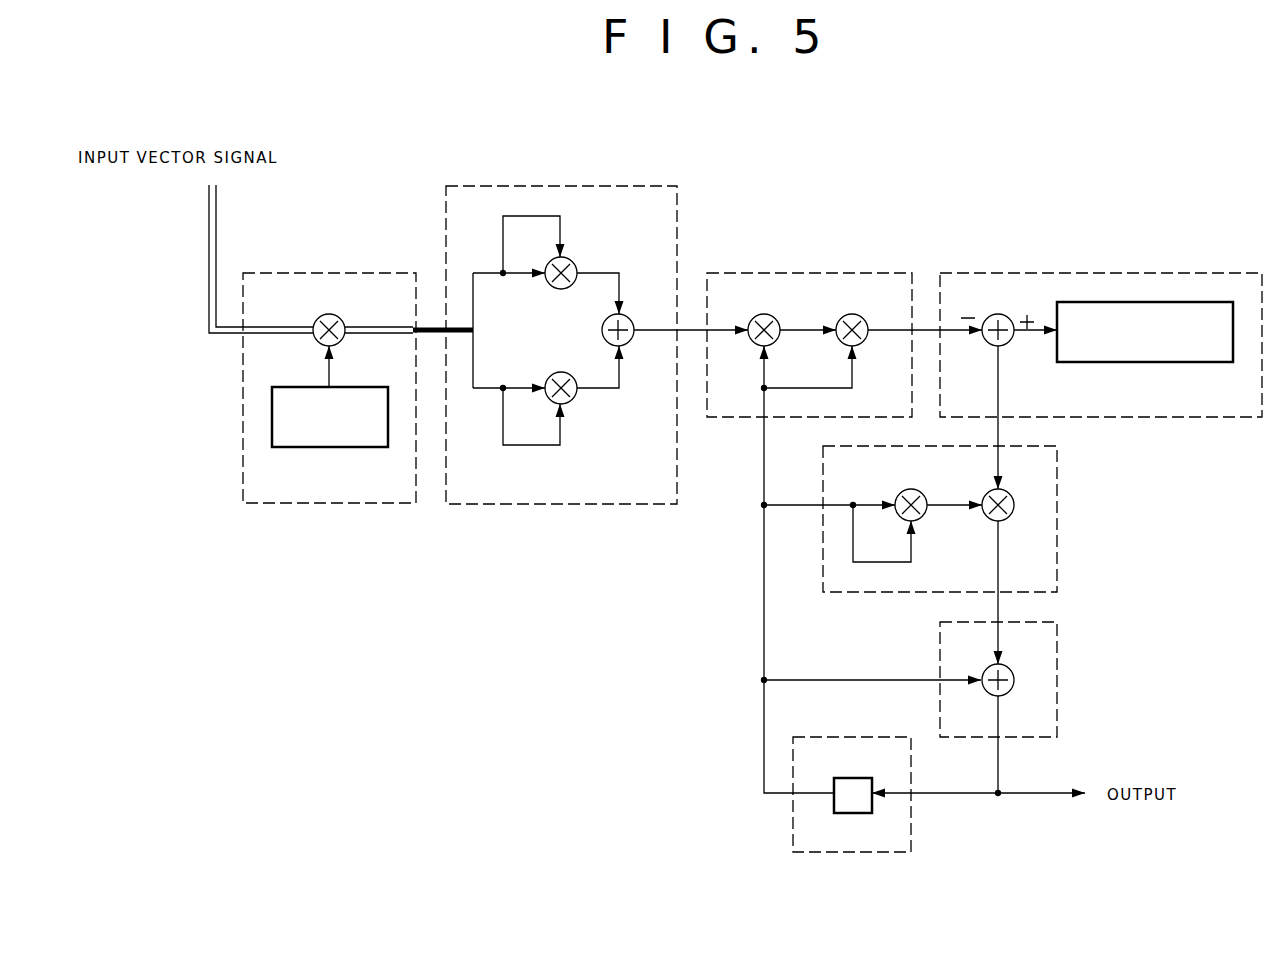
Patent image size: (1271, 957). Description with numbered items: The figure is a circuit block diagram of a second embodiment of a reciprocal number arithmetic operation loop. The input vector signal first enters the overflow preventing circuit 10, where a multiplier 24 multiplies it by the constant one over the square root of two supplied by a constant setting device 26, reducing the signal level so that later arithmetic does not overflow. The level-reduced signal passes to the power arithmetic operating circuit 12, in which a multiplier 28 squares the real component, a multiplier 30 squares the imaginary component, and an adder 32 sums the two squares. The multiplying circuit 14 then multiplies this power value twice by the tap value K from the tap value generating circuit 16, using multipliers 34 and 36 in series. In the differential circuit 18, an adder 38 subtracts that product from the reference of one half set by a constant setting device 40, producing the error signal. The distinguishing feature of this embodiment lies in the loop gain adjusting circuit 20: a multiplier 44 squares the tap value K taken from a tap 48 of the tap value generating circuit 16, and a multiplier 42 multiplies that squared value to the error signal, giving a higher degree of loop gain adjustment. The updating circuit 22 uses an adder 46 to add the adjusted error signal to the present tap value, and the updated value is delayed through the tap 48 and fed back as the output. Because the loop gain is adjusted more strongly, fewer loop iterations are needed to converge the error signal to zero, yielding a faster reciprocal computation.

The overflow preventing circuit 10 is at (323, 273).
The power arithmetic operating circuit 12 is at (545, 186).
The multiplying circuit 14 is at (805, 273).
The tap value generating circuit 16 is at (815, 853).
The differential circuit 18 is at (1070, 273).
The loop gain adjusting circuit 20 is at (1057, 470).
The updating circuit 22 is at (1057, 665).
The multiplier 24 is at (318, 318).
The constant setting device 26 is at (300, 448).
The multiplier 28 is at (574, 262).
The multiplier 30 is at (574, 400).
The adder 32 is at (601, 330).
The multiplier 34 is at (761, 316).
The multiplier 36 is at (851, 316).
The adder 38 is at (1010, 344).
The constant setting device 40 is at (1195, 362).
The multiplier 42 is at (1012, 517).
The multiplier 44 is at (899, 491).
The adder 46 is at (1012, 672).
The tap 48 is at (835, 780).